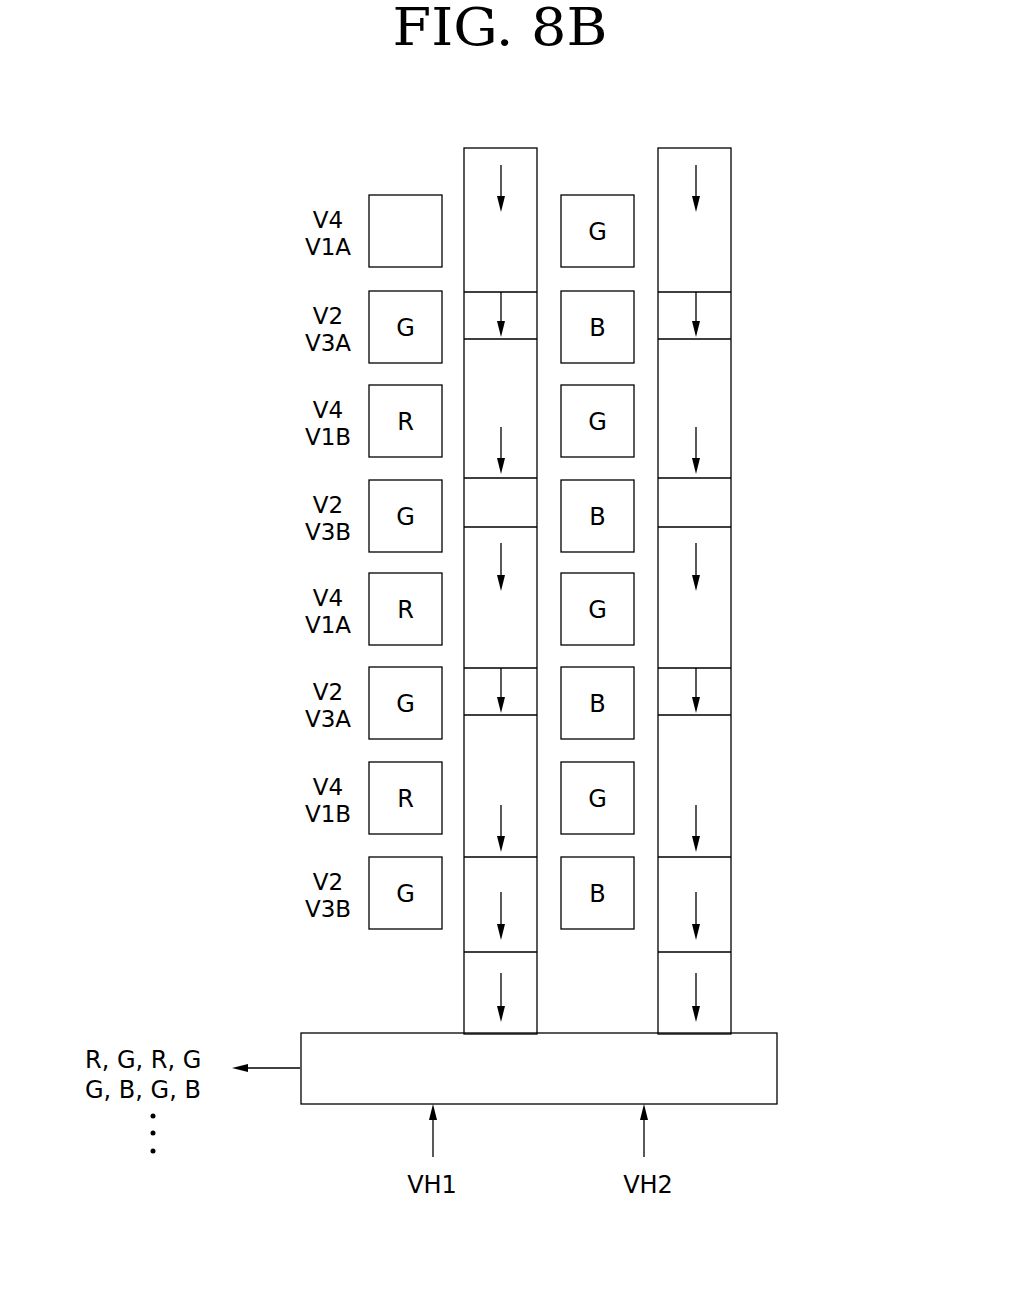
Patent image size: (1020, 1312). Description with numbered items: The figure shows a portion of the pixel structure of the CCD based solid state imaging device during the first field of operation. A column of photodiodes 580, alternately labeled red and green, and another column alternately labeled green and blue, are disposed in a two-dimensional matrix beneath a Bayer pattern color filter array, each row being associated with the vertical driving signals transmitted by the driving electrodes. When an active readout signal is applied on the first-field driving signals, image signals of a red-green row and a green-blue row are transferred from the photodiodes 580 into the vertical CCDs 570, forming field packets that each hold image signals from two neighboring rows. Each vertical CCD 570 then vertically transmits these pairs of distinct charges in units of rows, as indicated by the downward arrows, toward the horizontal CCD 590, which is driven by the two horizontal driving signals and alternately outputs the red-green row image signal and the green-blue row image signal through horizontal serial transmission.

The photodiode 580 is at (407, 195).
The vertical CCD 570 is at (731, 1005).
The horizontal CCD 590 is at (778, 1070).